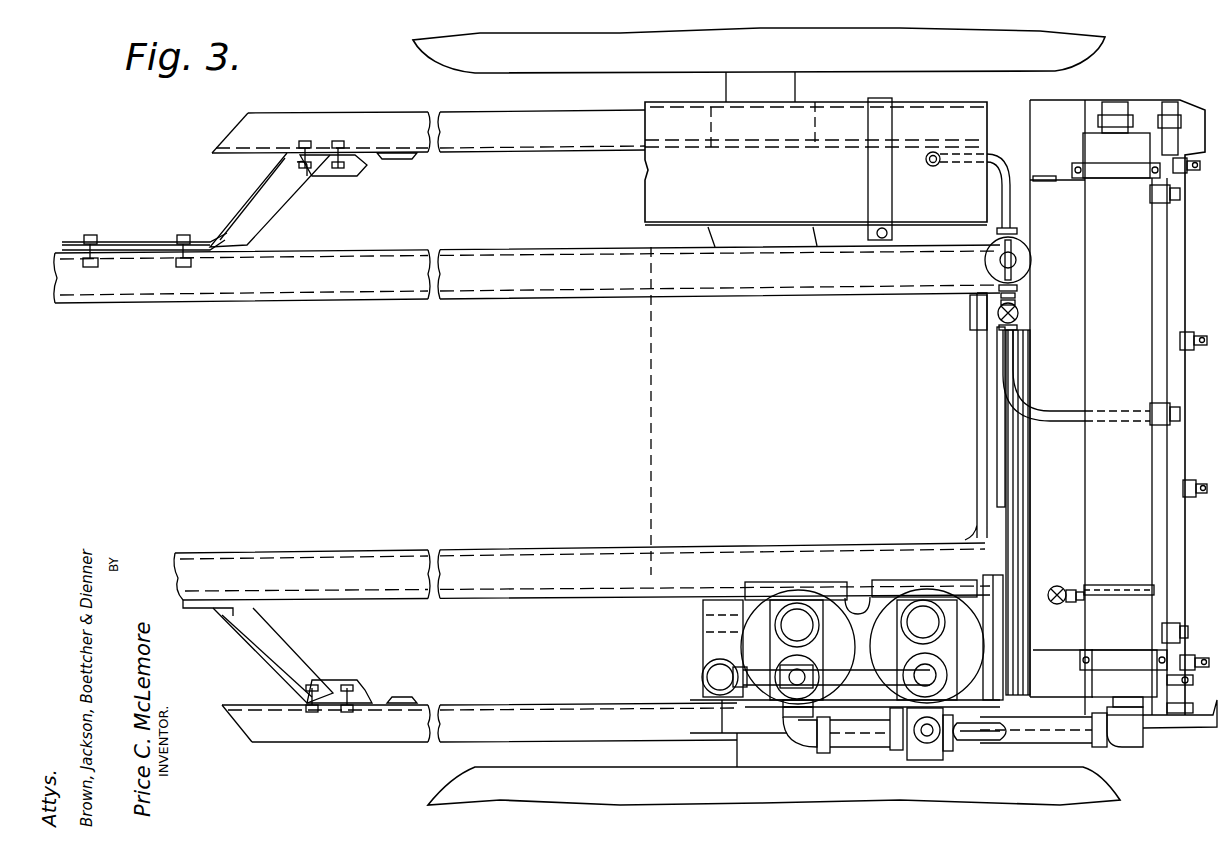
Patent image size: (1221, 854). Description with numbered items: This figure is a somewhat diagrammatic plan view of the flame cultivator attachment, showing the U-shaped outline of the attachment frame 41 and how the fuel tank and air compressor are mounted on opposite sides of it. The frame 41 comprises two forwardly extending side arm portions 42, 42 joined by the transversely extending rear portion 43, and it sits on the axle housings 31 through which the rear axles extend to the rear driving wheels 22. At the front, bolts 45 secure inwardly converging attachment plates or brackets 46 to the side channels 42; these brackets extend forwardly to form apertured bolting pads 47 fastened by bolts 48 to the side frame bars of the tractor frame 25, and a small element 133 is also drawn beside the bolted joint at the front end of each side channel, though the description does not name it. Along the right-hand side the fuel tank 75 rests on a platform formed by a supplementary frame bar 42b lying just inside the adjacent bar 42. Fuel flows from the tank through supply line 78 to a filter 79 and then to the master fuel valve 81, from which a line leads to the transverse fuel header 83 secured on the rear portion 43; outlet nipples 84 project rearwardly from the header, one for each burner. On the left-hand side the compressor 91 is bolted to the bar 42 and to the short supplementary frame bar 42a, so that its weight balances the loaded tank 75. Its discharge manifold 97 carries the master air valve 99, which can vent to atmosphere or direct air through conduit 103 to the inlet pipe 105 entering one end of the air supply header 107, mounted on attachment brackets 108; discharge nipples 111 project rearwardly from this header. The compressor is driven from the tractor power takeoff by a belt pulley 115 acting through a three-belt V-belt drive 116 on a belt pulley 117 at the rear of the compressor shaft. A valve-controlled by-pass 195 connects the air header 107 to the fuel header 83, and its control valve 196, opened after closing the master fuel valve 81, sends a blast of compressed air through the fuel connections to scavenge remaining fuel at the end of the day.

The rear driving wheels 22 is at (644, 67).
The tractor frame 25 is at (103, 304).
The axle housings 31 is at (770, 247).
The attachment frame 41 is at (377, 100).
The side arm portions 42 is at (497, 116).
The supplementary frame bar 42a is at (720, 612).
The supplementary frame bar 42b is at (660, 228).
The transversely extending rear portion 43 is at (1043, 345).
The bolts 45 is at (338, 168).
The attachment plates or brackets 46 is at (267, 187).
The bolting pads 47 is at (130, 242).
The bolts 48 is at (90, 235).
The fuel tank 75 is at (657, 178).
The supply line 78 is at (1011, 212).
The filter 79 is at (1030, 260).
The master fuel valve 81 is at (1020, 313).
The fuel header 83 is at (1173, 278).
The outlet nipples 84 is at (1183, 168).
The compressor 91 is at (836, 603).
The discharge manifold 97 is at (865, 748).
The master air valve 99 is at (927, 748).
The conduit 103 is at (1077, 735).
The inlet pipe 105 is at (1118, 735).
The air supply header 107 is at (1105, 470).
The attachment brackets 108 is at (1121, 170).
The discharge nipples 111 is at (1150, 195).
The belt pulley 115 is at (1000, 480).
The belt drive 116 is at (1020, 531).
The belt pulley 117 is at (1027, 680).
The bracket 133 is at (397, 160).
The by-pass 195 is at (1116, 597).
The control valve 196 is at (1057, 586).